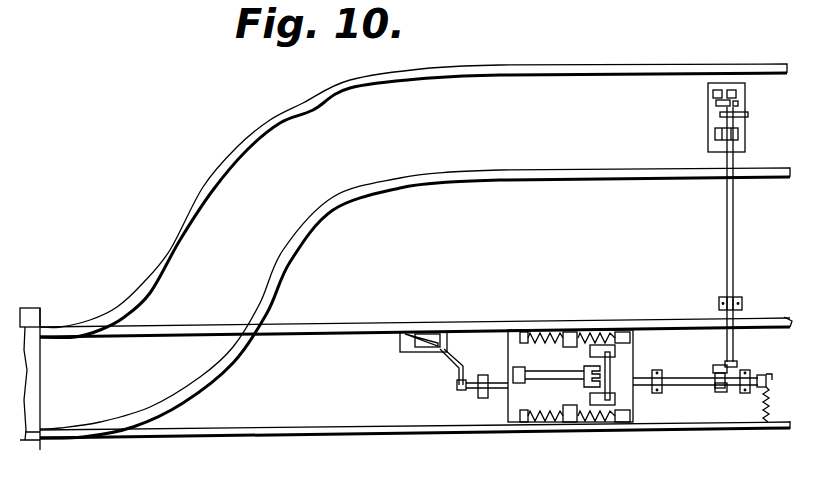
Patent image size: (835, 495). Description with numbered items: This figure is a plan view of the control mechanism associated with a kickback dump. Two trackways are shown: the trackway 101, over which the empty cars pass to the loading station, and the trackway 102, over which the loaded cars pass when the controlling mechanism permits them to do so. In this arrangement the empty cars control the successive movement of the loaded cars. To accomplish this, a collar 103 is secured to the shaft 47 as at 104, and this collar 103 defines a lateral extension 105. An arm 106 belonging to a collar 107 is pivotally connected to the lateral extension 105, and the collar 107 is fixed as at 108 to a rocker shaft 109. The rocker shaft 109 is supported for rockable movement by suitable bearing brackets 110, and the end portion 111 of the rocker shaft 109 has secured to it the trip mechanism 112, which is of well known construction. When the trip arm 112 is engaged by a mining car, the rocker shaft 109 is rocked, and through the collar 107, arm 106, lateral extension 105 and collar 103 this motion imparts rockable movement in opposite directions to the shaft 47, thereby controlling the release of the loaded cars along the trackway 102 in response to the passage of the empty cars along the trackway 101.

The shaft 47 is at (677, 388).
The trackway 101 is at (413, 201).
The trackway 102 is at (416, 303).
The collar 103 is at (718, 391).
The securing point 104 is at (721, 388).
The lateral extension 105 is at (717, 376).
The arm 106 is at (715, 366).
The collar 107 is at (737, 365).
The fixing point 108 is at (737, 390).
The rocker shaft 109 is at (733, 268).
The bearing brackets 110 is at (719, 302).
The end portion 111 is at (736, 130).
The trip mechanism 112 is at (737, 110).